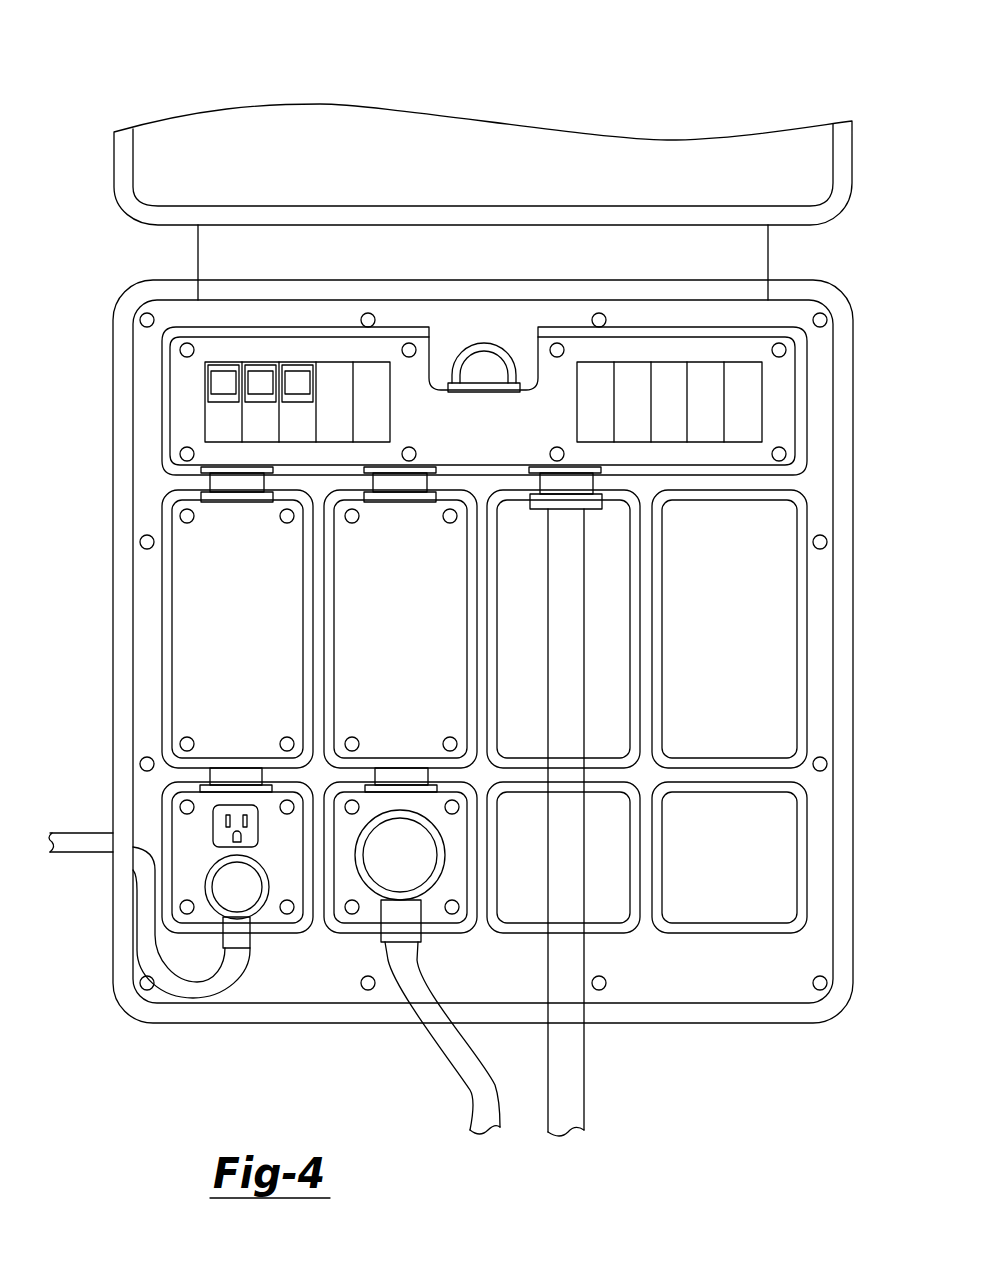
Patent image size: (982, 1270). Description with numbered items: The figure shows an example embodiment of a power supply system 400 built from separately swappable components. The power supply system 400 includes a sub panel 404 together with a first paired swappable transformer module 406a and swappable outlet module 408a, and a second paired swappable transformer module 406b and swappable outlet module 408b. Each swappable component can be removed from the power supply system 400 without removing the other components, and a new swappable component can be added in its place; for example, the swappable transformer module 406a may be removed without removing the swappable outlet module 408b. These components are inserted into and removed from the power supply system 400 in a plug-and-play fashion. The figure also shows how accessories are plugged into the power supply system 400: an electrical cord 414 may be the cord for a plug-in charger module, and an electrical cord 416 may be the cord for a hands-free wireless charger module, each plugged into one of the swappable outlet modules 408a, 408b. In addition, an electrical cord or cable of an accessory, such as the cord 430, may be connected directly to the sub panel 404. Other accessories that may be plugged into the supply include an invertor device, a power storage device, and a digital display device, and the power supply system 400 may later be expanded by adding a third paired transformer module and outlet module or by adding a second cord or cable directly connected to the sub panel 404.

The power supply system 400 is at (462, 568).
The sub panel 404 is at (467, 441).
The first swappable transformer module 406a is at (254, 637).
The second swappable transformer module 406b is at (419, 637).
The first swappable outlet module 408a is at (267, 913).
The second swappable outlet module 408b is at (360, 913).
The electrical cord 414 is at (75, 832).
The electrical cord 416 is at (475, 1103).
The cord 430 is at (572, 1075).